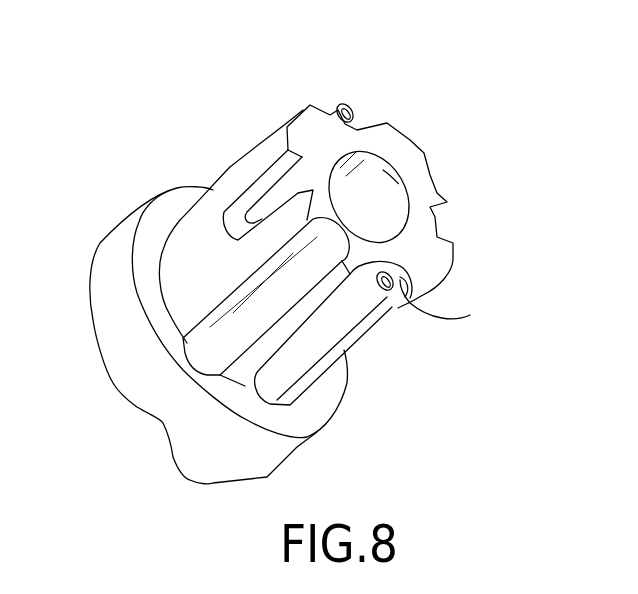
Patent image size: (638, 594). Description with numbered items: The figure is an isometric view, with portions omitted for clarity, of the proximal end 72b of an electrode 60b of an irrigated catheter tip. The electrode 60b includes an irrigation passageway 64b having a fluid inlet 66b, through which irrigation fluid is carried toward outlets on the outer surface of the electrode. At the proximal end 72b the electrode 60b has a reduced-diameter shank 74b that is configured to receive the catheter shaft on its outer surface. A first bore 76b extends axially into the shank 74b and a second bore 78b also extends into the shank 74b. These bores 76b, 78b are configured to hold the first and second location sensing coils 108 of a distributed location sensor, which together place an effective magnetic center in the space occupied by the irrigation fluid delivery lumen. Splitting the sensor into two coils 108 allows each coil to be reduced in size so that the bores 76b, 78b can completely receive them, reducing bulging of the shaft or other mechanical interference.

The electrode 60b is at (150, 83).
The proximal end 72b is at (245, 106).
The reduced-diameter shank 74b is at (213, 232).
The first bore 76b is at (328, 112).
The location sensing coils 108 is at (387, 362).
The fluid inlet 66b is at (398, 183).
The irrigation passageway 64b is at (397, 214).
The second bore 78b is at (470, 315).